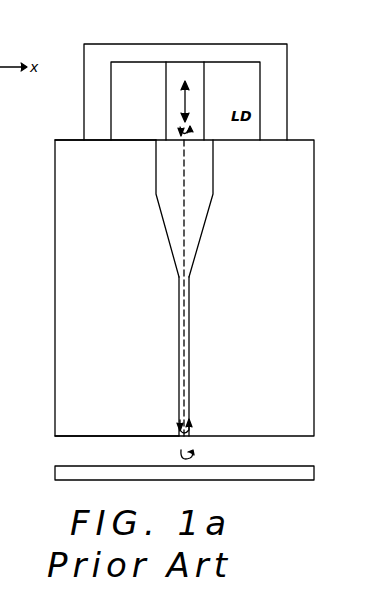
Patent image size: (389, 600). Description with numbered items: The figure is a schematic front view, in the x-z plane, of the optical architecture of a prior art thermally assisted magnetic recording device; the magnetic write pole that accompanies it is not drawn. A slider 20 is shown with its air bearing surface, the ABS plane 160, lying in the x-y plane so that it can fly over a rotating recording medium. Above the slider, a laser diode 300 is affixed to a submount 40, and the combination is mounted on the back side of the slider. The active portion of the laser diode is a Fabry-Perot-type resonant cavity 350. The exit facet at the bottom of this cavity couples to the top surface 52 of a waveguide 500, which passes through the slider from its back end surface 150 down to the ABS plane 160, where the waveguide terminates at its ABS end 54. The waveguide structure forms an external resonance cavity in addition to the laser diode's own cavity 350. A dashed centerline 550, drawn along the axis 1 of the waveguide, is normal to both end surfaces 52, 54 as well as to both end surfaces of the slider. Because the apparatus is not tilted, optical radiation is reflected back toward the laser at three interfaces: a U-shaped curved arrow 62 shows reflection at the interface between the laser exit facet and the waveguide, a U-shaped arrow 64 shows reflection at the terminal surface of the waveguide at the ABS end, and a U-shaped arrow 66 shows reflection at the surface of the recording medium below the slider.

The central axis 1 is at (190, 360).
The slider 20 is at (331, 252).
The submount 40 is at (276, 107).
The top surface of the waveguide 52 is at (209, 140).
The ABS end of the waveguide 54 is at (185, 438).
The U-shaped curved arrow 62 is at (178, 134).
The U-shaped arrow 64 is at (199, 428).
The U-shaped arrow 66 is at (199, 458).
The back end surface of the slider 150 is at (97, 141).
The ABS plane 160 is at (99, 435).
The laser diode 300 is at (247, 80).
The Fabry-Perot-type resonant cavity 350 is at (187, 72).
The waveguide 500 is at (196, 226).
The centerline 550 is at (191, 302).